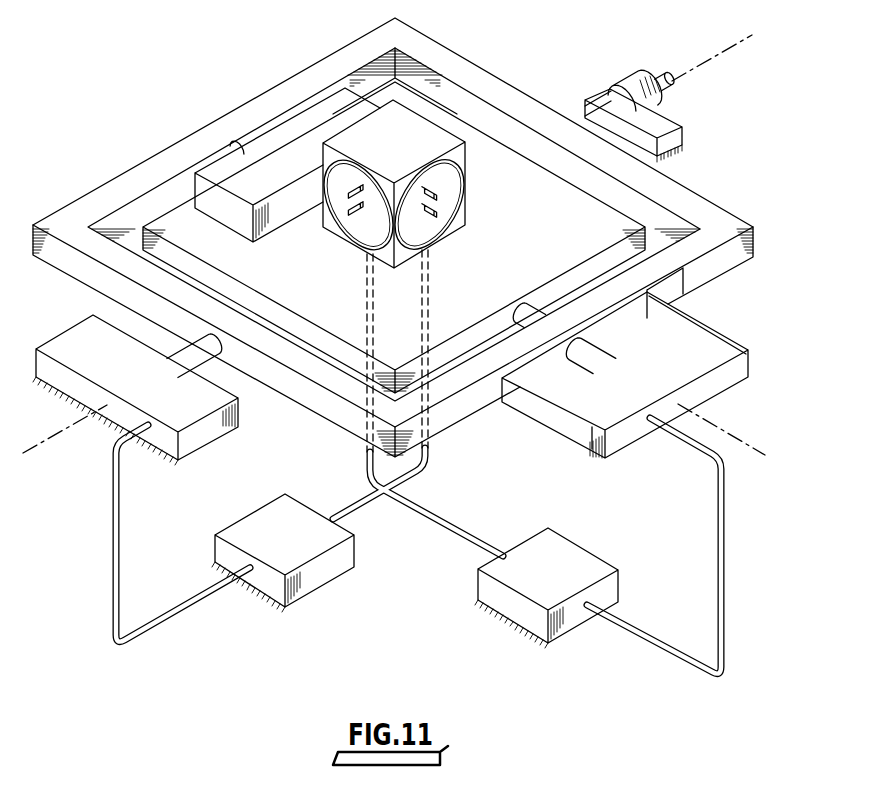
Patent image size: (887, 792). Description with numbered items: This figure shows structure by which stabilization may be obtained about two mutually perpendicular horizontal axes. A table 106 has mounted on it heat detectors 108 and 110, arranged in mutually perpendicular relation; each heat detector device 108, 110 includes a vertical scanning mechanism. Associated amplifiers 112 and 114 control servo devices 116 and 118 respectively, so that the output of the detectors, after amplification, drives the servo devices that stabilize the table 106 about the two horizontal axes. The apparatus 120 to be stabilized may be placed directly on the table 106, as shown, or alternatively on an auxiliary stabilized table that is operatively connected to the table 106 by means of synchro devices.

The table 106 is at (394, 237).
The heat detector 108 is at (441, 222).
The heat detector 110 is at (356, 234).
The amplifier 112 is at (546, 588).
The amplifier 114 is at (283, 553).
The servo device 116 is at (625, 375).
The servo device 118 is at (135, 390).
The apparatus to be stabilized 120 is at (287, 165).